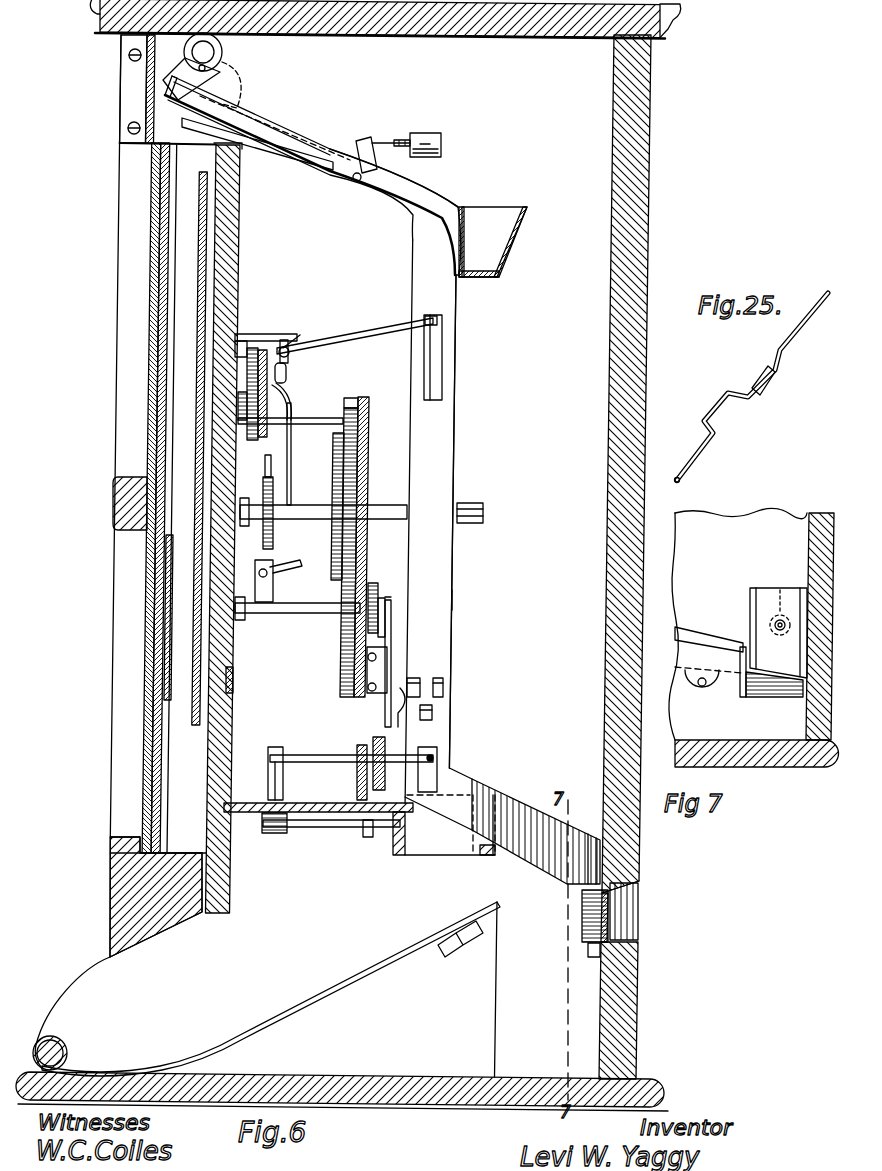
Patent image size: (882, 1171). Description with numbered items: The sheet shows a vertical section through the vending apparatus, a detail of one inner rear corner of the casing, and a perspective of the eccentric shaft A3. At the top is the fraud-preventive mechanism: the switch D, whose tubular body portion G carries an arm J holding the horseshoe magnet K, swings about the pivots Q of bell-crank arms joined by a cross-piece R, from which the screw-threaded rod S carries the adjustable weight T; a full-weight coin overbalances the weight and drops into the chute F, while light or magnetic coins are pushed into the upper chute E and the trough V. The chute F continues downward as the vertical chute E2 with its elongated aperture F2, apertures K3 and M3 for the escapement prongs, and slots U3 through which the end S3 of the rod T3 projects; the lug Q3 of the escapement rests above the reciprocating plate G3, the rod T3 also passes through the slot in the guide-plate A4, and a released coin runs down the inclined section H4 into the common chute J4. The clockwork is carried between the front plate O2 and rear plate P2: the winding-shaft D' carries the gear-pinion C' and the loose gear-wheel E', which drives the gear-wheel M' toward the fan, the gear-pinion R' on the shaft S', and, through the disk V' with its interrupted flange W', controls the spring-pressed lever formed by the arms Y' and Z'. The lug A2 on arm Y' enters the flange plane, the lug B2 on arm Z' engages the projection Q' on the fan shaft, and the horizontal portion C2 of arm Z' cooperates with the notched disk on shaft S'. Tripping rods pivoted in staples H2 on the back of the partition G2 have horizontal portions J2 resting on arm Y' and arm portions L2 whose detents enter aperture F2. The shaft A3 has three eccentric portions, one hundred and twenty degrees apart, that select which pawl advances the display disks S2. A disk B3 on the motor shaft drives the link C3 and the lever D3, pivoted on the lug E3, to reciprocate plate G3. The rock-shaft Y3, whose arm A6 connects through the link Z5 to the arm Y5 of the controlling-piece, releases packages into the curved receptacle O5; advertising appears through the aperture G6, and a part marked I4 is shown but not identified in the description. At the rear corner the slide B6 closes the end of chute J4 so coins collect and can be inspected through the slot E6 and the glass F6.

In FIG. 6, the magnet K is at (222, 62).
In FIG. 6, the body portion G is at (188, 113).
In FIG. 6, the switch mechanism D is at (313, 422).
In FIG. 6, the cross-piece R is at (357, 149).
In FIG. 6, the screw-threaded rod S is at (391, 132).
In FIG. 6, the weight T is at (441, 145).
In FIG. 6, the upper chute E is at (394, 178).
In FIG. 6, the chute F is at (392, 205).
In FIG. 6, the pivot angles Q is at (350, 192).
In FIG. 6, the trough V is at (493, 242).
In FIG. 6, the partition G2 is at (237, 258).
In FIG. 6, the display disk S2 is at (198, 354).
In FIG. 6, the aperture G6 is at (165, 672).
In FIG. 6, the base block I4 is at (248, 830).
In FIG. 6, the curved receptacle O5 is at (214, 1056).
In FIG. 6, the elongated aperture F2 is at (443, 340).
In FIG. 6, the arm portion L2 is at (350, 343).
In FIG. 6, the horizontal portion J2 is at (301, 326).
In FIG. 6, the staples H2 is at (255, 335).
In FIG. 6, the disk V' is at (284, 328).
In FIG. 6, the horizontal arm Y' is at (294, 372).
In FIG. 6, the horizontal portion C2 is at (296, 410).
In FIG. 6, the lug A2 is at (292, 410).
In FIG. 6, the shaft S' is at (297, 396).
In FIG. 6, the gear-pinion R' is at (369, 387).
In FIG. 6, the gear-wheel E' is at (373, 547).
In FIG. 6, the gear-pinion C' is at (367, 552).
In FIG. 6, the rear plate P2 is at (345, 488).
In FIG. 6, the winding-shaft D' is at (364, 502).
In FIG. 6, the gear-wheel M' is at (257, 506).
In FIG. 6, the flange W' is at (268, 459).
In FIG. 6, the vertical arm Z' is at (301, 454).
In FIG. 6, the projection Q' is at (281, 581).
In FIG. 6, the lug B2 is at (290, 568).
In FIG. 6, the arm J is at (310, 613).
In FIG. 6, the disk B3 is at (373, 583).
In FIG. 6, the lever D3 is at (392, 638).
In FIG. 6, the link C3 is at (390, 600).
In FIG. 6, the vertical chute E2 is at (455, 600).
In FIG. 6, the lug E3 is at (367, 672).
In FIG. 6, the front plate O2 is at (234, 685).
In FIG. 6, the apertures K3 is at (446, 690).
In FIG. 6, the apertures M3 is at (432, 713).
In FIG. 6, the lug Q3 is at (393, 725).
In FIG. 6, the rod T3 is at (300, 755).
In FIG. 6, the reciprocating plate G3 is at (373, 740).
In FIG. 6, the rock-shaft Y3 is at (268, 770).
In FIG. 6, the guide-plate A4 is at (357, 782).
In FIG. 6, the slots U3 is at (432, 782).
In FIG. 6, the rod end S3 is at (437, 758).
In FIG. 6, the link Z5 is at (330, 827).
In FIG. 6, the arm A6 is at (280, 833).
In FIG. 6, the arm Y5 is at (370, 837).
In FIG. 6, the inclined chute section H4 is at (502, 826).
In FIG. 6, the common chute J4 is at (582, 920).
In FIG. 7, the common chute J4 is at (739, 650).
In FIG. 6, the sheet of glass F6 is at (612, 910).
In FIG. 6, the slot E6 is at (640, 888).
In FIG. 25, the eccentric shaft A3 is at (797, 345).
In FIG. 7, the slide B6 is at (760, 602).